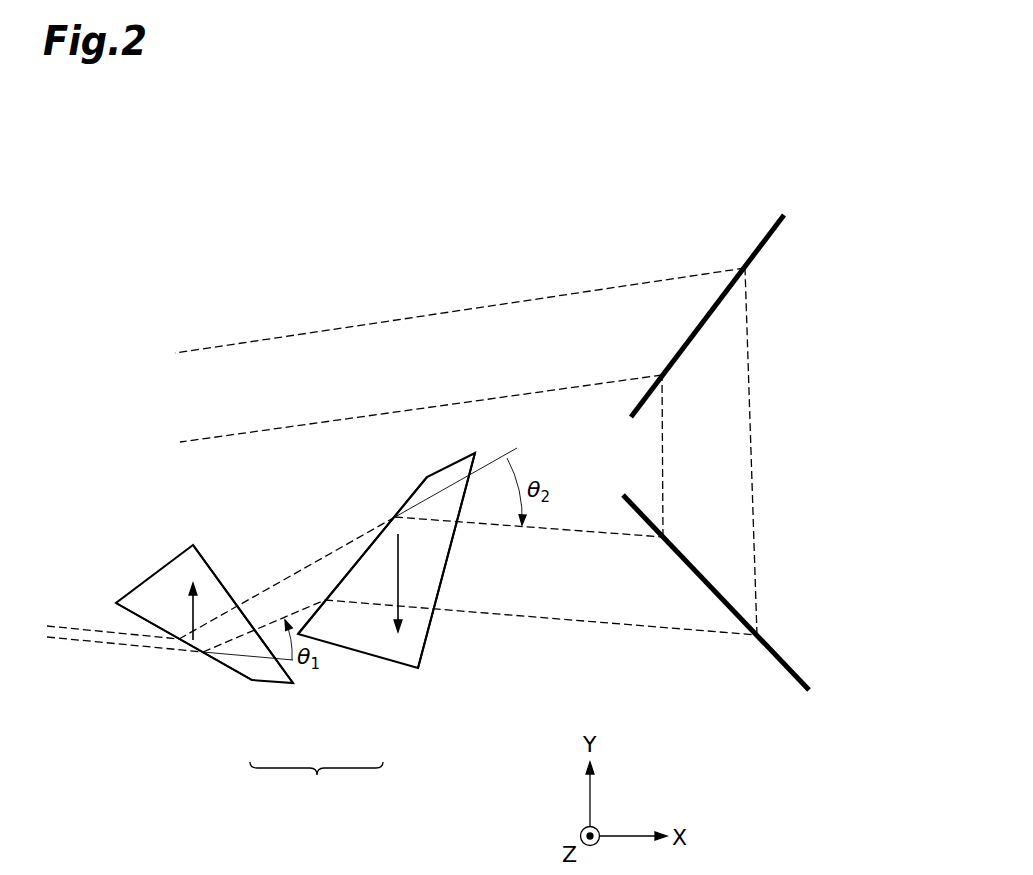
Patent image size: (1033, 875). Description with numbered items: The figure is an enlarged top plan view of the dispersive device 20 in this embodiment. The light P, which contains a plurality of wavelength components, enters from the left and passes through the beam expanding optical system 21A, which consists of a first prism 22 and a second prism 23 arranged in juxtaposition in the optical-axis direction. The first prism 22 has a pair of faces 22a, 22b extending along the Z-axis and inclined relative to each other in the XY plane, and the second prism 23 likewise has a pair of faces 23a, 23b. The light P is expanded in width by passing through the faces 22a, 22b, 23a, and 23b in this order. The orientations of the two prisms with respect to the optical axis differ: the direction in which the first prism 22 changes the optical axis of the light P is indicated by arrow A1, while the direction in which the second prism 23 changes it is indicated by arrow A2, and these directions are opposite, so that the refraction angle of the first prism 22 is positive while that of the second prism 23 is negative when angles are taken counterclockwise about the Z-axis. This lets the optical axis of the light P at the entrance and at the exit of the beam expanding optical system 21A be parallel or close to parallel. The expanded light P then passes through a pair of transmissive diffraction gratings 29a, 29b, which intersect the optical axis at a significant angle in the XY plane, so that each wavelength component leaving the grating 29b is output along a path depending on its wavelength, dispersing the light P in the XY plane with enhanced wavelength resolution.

The dispersive device 20 is at (616, 153).
The beam expanding optical system 21A is at (316, 785).
The first prism 22 is at (269, 694).
The face of first prism 22a is at (215, 659).
The face of first prism 22b is at (222, 580).
The second prism 23 is at (376, 669).
The face of second prism 23a is at (406, 503).
The face of second prism 23b is at (428, 637).
The transmissive diffraction grating 29a is at (787, 662).
The transmissive diffraction grating 29b is at (765, 243).
The arrow indicating direction of optical-axis change by first prism A1 is at (190, 610).
The arrow indicating direction of optical-axis change by second prism A2 is at (400, 567).
The light P is at (73, 642).